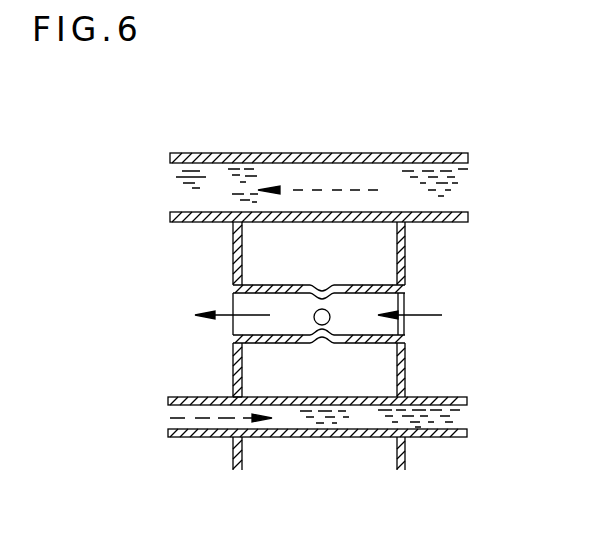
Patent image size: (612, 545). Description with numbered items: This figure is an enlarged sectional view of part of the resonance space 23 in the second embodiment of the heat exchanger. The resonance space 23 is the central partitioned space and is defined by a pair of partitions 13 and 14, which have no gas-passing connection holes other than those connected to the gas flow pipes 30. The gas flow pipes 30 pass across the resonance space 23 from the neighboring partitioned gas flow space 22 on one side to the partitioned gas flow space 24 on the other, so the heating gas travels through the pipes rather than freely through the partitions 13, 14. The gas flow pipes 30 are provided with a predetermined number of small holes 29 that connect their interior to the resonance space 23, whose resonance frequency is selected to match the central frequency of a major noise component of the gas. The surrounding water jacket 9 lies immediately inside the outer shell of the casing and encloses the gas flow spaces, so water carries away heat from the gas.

The water jacket 9 is at (343, 172).
The resonance space 23 is at (380, 255).
The partition 13 is at (407, 262).
The partition 14 is at (233, 245).
The partitioned gas flow space 22 is at (452, 362).
The partitioned gas flow space 24 is at (173, 357).
The small holes 29 is at (322, 326).
The gas flow pipes 30 is at (360, 343).